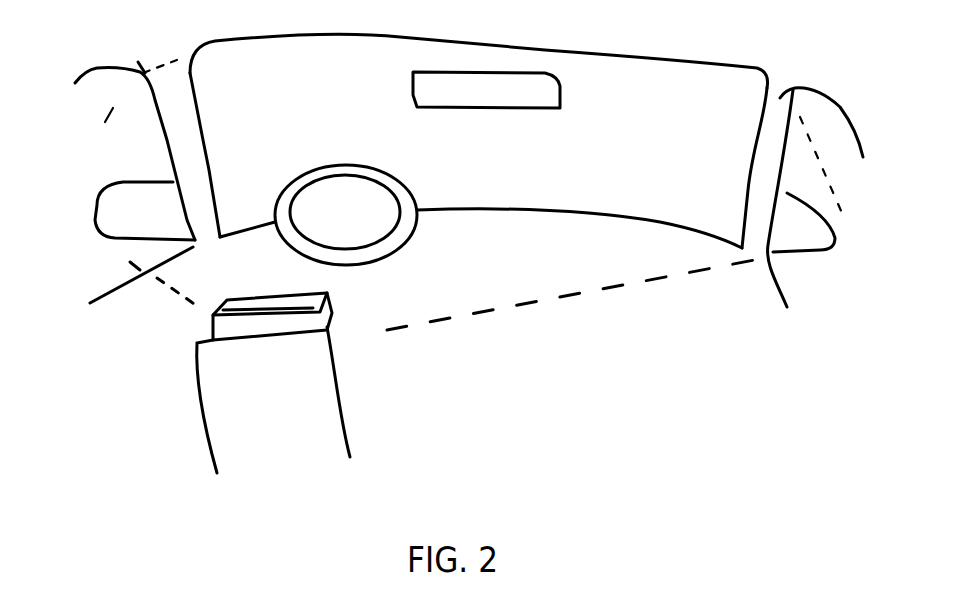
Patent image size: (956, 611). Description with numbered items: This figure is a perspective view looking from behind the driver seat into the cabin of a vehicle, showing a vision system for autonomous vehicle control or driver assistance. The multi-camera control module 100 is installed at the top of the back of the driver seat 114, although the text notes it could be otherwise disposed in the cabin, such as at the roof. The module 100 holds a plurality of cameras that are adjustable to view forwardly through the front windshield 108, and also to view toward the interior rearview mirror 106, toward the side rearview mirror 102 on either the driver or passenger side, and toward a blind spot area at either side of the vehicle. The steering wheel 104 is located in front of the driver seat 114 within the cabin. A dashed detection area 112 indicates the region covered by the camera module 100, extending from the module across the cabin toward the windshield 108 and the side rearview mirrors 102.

The multi-camera control module 100 is at (323, 320).
The side rearview mirror 102 is at (120, 210).
The steering wheel 104 is at (383, 181).
The interior rearview mirror 106 is at (520, 84).
The front windshield 108 is at (672, 70).
The detection area 112 is at (203, 308).
The driver seat 114 is at (323, 427).